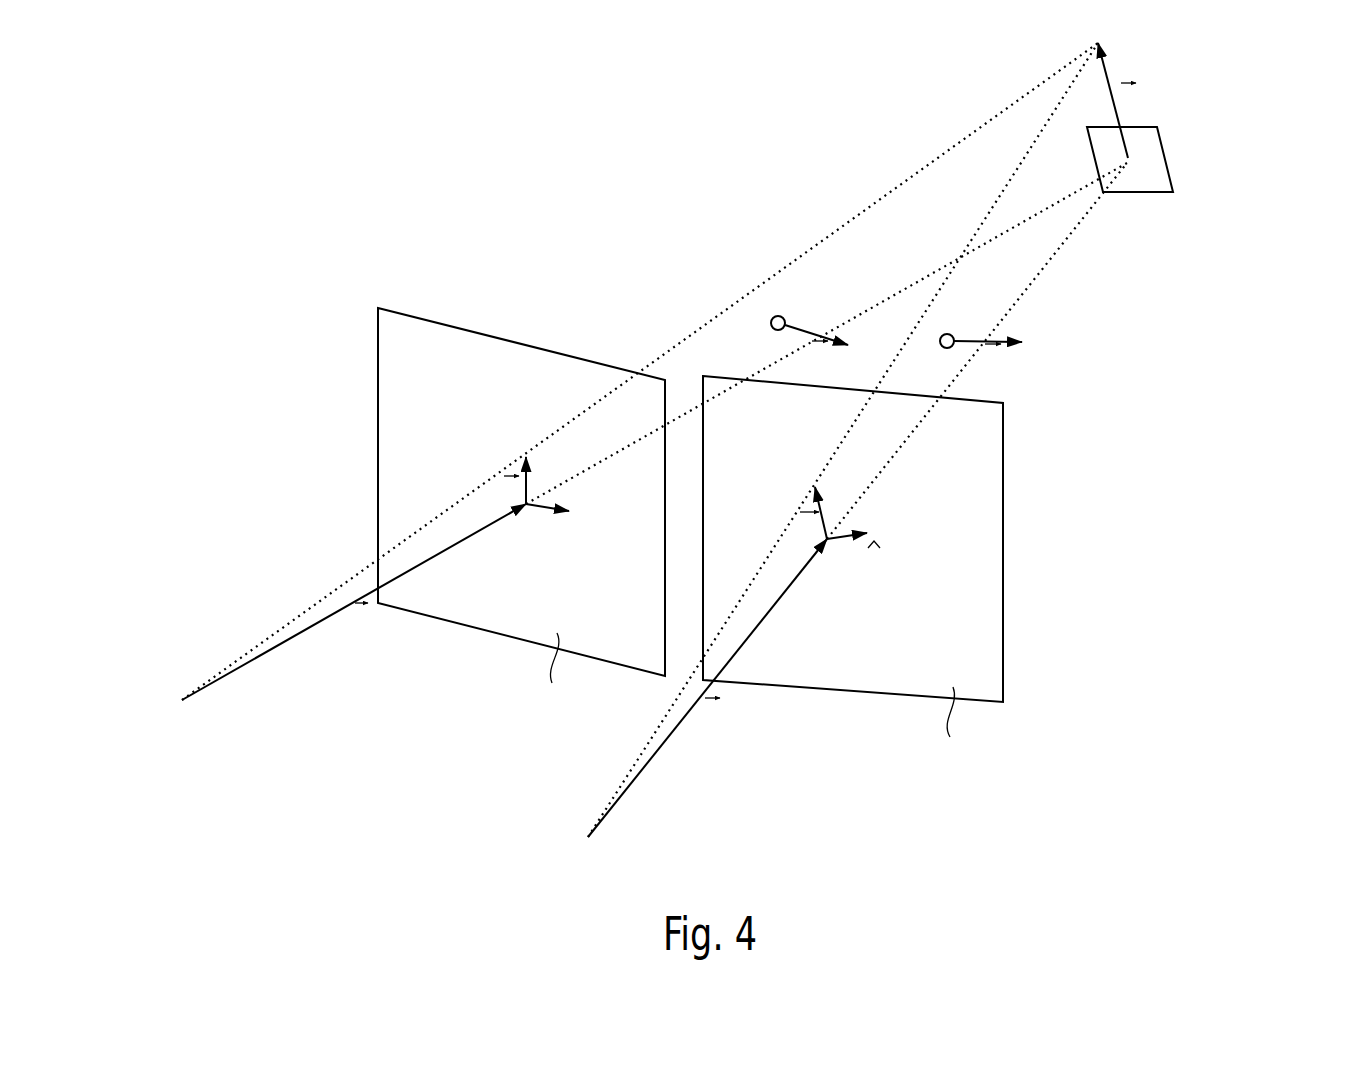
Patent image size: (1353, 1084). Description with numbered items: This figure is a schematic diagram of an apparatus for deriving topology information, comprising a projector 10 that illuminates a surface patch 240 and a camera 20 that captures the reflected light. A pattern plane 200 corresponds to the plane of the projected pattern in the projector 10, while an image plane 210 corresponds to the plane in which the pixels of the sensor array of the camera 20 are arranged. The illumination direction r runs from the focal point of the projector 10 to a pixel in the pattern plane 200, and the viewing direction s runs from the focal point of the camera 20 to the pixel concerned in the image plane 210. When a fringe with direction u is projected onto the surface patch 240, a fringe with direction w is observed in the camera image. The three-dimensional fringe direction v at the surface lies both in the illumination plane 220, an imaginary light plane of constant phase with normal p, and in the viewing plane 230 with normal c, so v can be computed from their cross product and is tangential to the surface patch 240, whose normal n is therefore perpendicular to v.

The projector 10 is at (323, 614).
The camera 20 is at (830, 704).
The pattern plane 200 is at (378, 355).
The image plane 210 is at (1003, 474).
The illumination plane 220 is at (882, 227).
The viewing plane 230 is at (1025, 263).
The surface patch 240 is at (1167, 157).